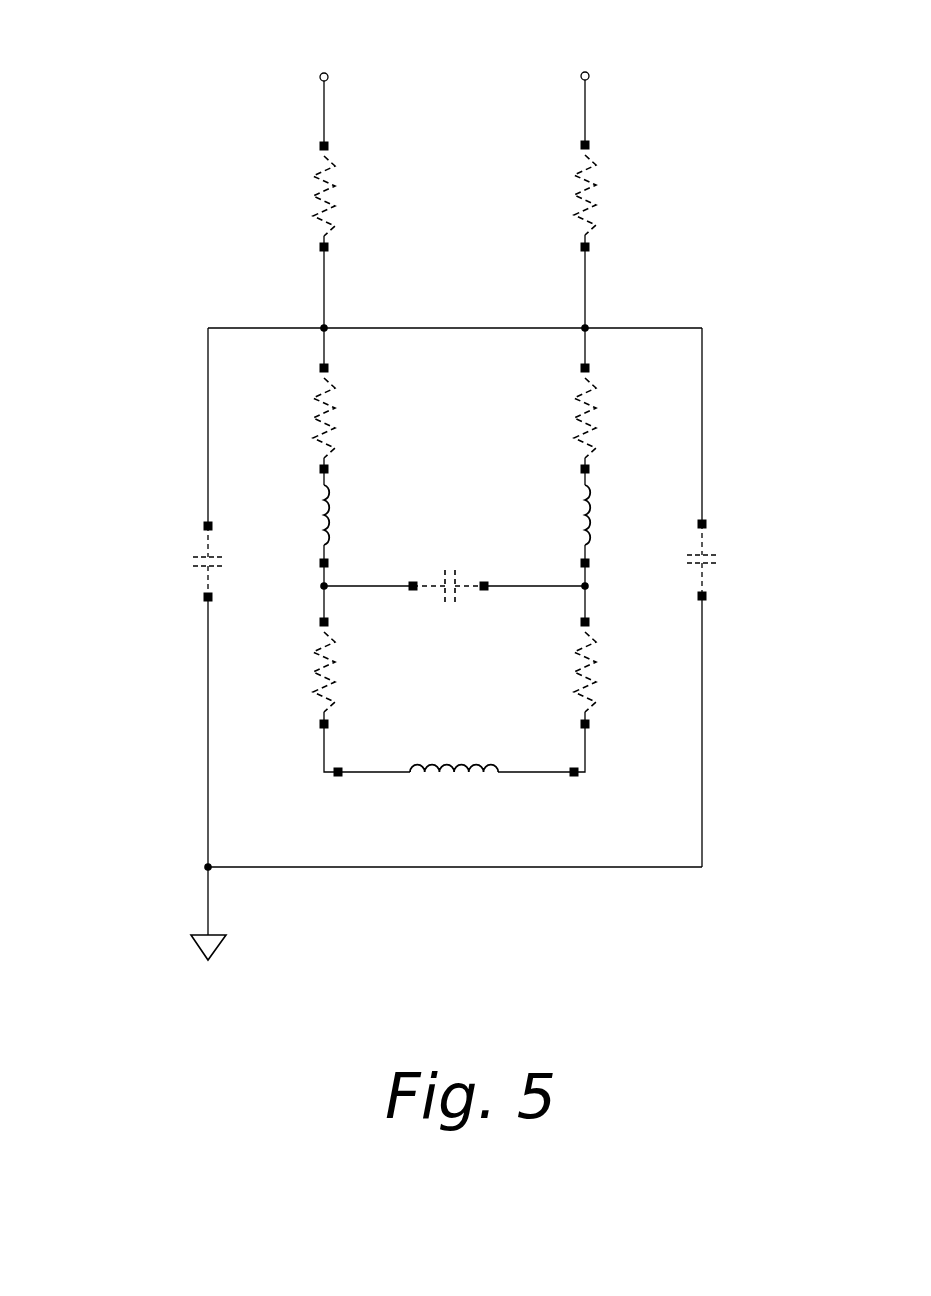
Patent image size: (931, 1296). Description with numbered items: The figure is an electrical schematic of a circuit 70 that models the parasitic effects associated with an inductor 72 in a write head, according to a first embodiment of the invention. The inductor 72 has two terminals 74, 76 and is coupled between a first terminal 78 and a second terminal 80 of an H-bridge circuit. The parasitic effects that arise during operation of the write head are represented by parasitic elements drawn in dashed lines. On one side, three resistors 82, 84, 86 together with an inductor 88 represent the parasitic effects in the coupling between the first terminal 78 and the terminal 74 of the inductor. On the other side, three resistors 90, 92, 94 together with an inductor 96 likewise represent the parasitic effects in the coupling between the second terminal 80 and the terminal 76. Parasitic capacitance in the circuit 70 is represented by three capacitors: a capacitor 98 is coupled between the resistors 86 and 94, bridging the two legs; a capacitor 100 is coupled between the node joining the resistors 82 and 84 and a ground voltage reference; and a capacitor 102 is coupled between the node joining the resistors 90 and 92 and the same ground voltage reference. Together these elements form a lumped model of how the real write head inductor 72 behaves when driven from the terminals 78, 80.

The circuit 70 is at (150, 176).
The inductor 72 is at (463, 753).
The terminal 74 is at (341, 777).
The terminal 76 is at (577, 777).
The first terminal 78 is at (322, 74).
The second terminal 80 is at (583, 73).
The resistor 82 is at (338, 207).
The resistor 84 is at (338, 426).
The resistor 86 is at (338, 684).
The inductor 88 is at (345, 511).
The resistor 90 is at (572, 190).
The resistor 92 is at (572, 406).
The resistor 94 is at (572, 662).
The inductor 96 is at (600, 514).
The capacitor 98 is at (455, 572).
The capacitor 100 is at (200, 560).
The capacitor 102 is at (716, 565).